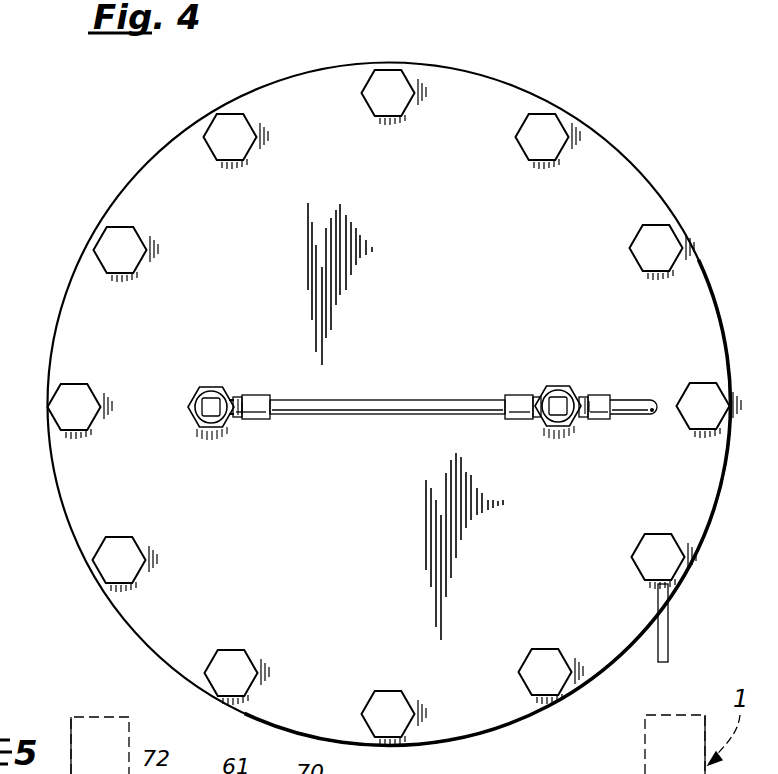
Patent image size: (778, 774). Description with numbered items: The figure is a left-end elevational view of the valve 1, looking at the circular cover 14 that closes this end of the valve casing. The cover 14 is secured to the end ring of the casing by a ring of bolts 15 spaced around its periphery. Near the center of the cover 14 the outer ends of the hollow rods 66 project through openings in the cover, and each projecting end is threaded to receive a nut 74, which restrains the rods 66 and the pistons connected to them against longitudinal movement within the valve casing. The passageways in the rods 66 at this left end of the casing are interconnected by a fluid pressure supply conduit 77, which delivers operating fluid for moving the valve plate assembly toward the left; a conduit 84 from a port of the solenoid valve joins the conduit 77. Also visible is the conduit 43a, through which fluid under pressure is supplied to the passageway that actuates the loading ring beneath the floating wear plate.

The valve 1 is at (438, 52).
The circular cover 14 is at (118, 218).
The bolts 15 is at (228, 130).
The conduit 43a is at (667, 630).
The rods 66 is at (224, 420).
The nut 74 is at (216, 386).
The fluid pressure supply conduit 77 is at (437, 400).
The conduit 84 is at (628, 400).